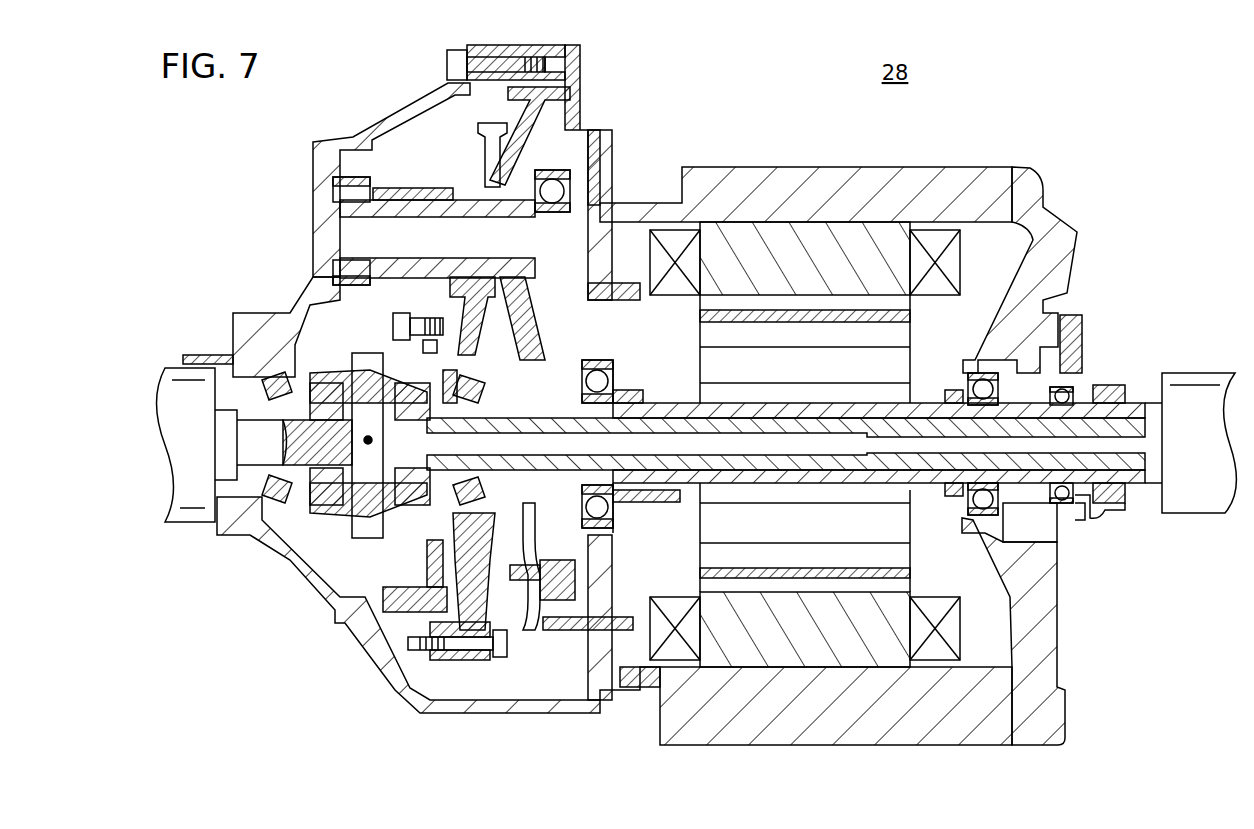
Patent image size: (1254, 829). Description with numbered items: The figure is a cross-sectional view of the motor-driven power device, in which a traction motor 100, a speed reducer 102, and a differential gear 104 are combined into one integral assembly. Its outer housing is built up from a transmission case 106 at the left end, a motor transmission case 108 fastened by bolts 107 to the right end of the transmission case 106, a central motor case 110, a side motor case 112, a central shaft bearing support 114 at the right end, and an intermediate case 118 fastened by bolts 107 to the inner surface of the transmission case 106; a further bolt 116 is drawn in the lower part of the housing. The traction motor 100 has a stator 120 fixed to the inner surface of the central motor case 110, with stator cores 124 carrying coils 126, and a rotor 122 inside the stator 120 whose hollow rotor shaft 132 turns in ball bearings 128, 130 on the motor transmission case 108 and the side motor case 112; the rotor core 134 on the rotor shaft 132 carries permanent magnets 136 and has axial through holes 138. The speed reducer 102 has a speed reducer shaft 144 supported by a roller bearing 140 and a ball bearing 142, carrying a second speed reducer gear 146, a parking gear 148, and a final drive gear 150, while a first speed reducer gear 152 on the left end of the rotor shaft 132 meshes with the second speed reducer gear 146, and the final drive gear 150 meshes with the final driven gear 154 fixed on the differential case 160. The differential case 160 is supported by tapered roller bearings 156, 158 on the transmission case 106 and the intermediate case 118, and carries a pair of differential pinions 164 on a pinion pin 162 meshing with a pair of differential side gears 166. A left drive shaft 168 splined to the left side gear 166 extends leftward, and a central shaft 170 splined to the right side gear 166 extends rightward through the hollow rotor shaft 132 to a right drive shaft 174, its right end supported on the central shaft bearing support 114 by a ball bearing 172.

The traction motor 100 is at (995, 215).
The speed reducer 102 is at (425, 125).
The differential gear 104 is at (312, 355).
The transmission case 106 is at (238, 310).
The bolts 107 is at (447, 60).
The motor transmission case 108 is at (578, 68).
The central motor case 110 is at (795, 165).
The side motor case 112 is at (1050, 200).
The central shaft bearing support 114 is at (1082, 338).
The bolt 116 is at (499, 660).
The intermediate case 118 is at (512, 648).
The stator 120 is at (680, 245).
The rotor 122 is at (697, 348).
The stator cores 124 is at (752, 245).
The coils 126 is at (932, 245).
The ball bearing 128 is at (615, 372).
The ball bearing 130 is at (970, 385).
The rotor shaft 132 is at (658, 505).
The rotor core 134 is at (797, 386).
The permanent magnets 136 is at (697, 314).
The through holes 138 is at (875, 348).
The roller bearing 140 is at (335, 180).
The ball bearing 142 is at (550, 214).
The speed reducer shaft 144 is at (396, 240).
The second speed reducer gear 146 is at (572, 94).
The parking gear 148 is at (492, 120).
The final drive gear 150 is at (430, 195).
The first speed reducer gear 152 is at (560, 419).
The final driven gear 154 is at (440, 640).
The tapered roller bearing 156 is at (250, 365).
The tapered roller bearing 158 is at (478, 275).
The differential case 160 is at (318, 508).
The pinion pin 162 is at (370, 540).
The differential pinions 164 is at (385, 595).
The differential side gears 166 is at (415, 470).
The left drive shaft 168 is at (200, 440).
The central shaft 170 is at (698, 486).
The ball bearing 172 is at (1070, 388).
The right drive shaft 174 is at (1110, 512).